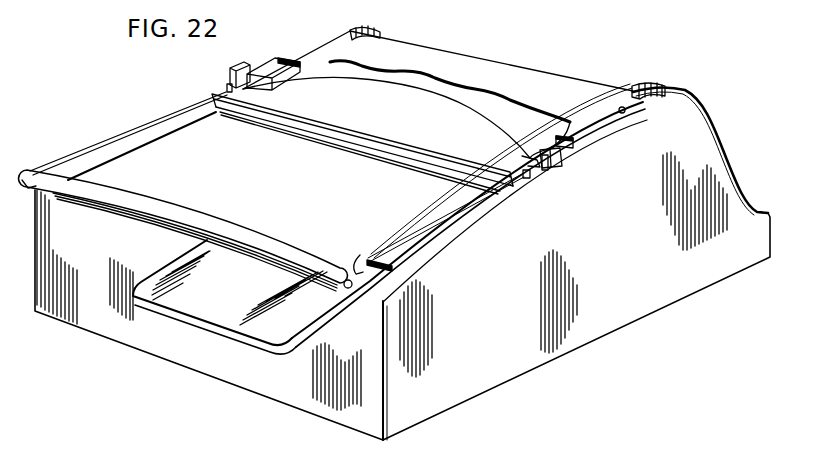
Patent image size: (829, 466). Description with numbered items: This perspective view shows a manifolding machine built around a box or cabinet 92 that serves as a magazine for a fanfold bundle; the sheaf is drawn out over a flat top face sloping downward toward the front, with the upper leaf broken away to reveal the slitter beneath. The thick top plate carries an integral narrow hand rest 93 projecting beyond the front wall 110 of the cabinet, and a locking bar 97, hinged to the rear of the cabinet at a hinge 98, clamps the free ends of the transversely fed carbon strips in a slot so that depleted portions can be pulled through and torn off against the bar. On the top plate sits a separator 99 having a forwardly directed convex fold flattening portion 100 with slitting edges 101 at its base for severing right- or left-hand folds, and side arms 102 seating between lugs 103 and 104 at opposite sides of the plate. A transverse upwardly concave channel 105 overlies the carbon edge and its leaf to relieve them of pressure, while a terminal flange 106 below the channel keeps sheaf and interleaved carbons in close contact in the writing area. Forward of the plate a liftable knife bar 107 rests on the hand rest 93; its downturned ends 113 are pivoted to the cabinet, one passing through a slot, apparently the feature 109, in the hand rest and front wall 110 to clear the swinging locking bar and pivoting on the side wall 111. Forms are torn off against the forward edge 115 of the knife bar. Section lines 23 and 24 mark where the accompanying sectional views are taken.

The box or cabinet 92 is at (626, 289).
The hand rest 93 is at (203, 305).
The locking bar 97 is at (580, 168).
The hinge 98 is at (643, 116).
The separator 99 is at (405, 85).
The convex fold flattening portion 100 is at (473, 113).
The slitting edges 101 is at (282, 43).
The side arms 102 is at (257, 63).
The lug 103 is at (293, 70).
The lug 104 is at (229, 75).
The transverse upwardly concave channel 105 is at (358, 108).
The terminal flange 106 is at (345, 145).
The knife bar 107 is at (231, 222).
The hook 109 is at (343, 284).
The front wall 110 is at (63, 305).
The side wall 111 is at (478, 383).
The downturned ends 113 is at (30, 190).
The forward edge 115 is at (273, 255).
The section line 23 is at (177, 237).
The section line 24 is at (70, 123).